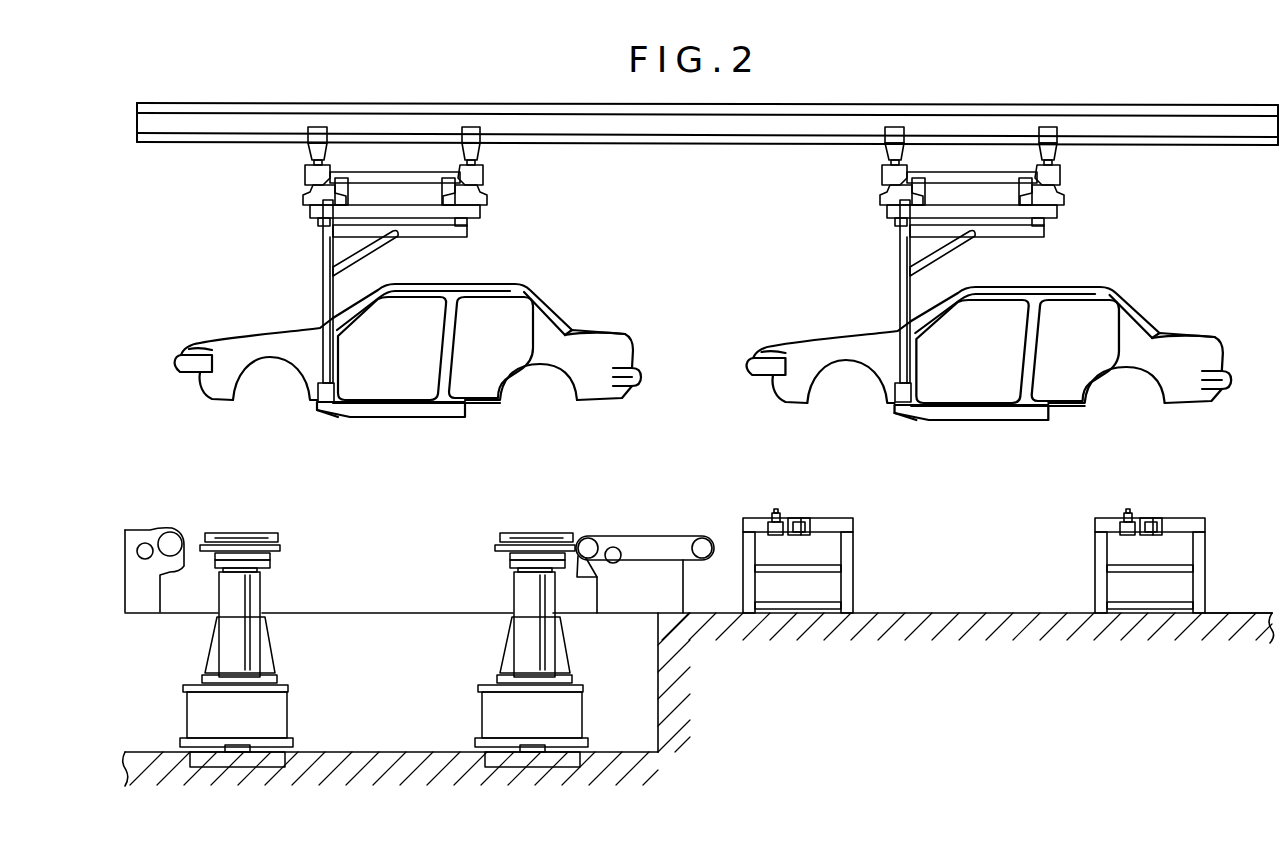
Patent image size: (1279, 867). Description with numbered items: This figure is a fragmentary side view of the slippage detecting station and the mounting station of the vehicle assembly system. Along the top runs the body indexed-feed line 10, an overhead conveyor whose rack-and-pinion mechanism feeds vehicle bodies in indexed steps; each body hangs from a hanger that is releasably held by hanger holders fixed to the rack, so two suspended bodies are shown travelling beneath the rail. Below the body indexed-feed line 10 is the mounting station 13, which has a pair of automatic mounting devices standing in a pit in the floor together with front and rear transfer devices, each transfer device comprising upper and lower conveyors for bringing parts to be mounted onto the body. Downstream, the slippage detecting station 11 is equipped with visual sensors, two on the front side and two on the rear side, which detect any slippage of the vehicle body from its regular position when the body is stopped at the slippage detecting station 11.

The body indexed-feed line 10 is at (824, 127).
The slippage detecting station 11 is at (1200, 492).
The mounting station 13 is at (640, 468).